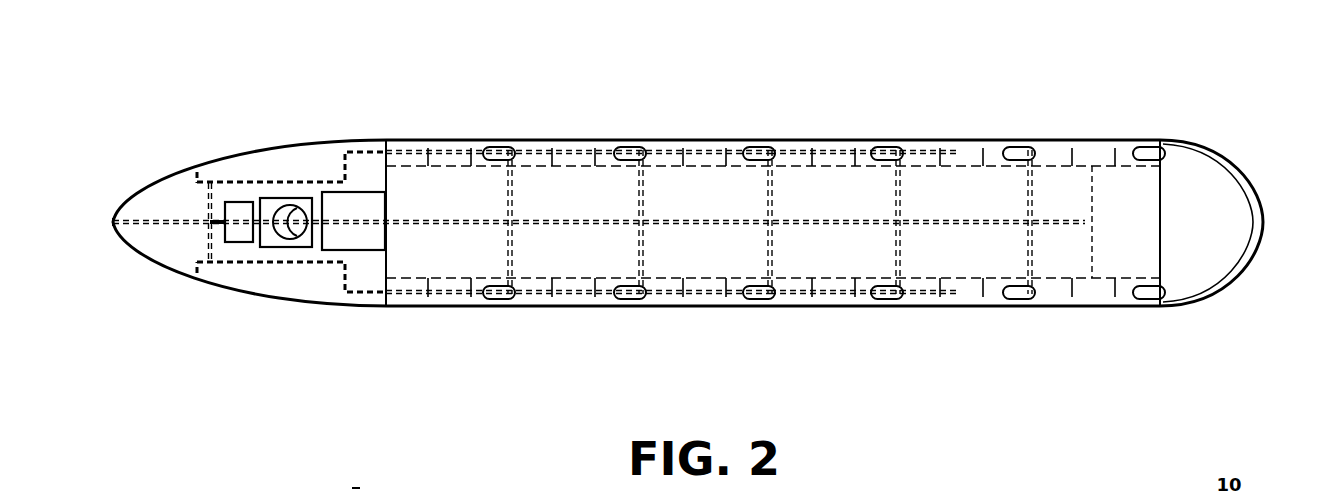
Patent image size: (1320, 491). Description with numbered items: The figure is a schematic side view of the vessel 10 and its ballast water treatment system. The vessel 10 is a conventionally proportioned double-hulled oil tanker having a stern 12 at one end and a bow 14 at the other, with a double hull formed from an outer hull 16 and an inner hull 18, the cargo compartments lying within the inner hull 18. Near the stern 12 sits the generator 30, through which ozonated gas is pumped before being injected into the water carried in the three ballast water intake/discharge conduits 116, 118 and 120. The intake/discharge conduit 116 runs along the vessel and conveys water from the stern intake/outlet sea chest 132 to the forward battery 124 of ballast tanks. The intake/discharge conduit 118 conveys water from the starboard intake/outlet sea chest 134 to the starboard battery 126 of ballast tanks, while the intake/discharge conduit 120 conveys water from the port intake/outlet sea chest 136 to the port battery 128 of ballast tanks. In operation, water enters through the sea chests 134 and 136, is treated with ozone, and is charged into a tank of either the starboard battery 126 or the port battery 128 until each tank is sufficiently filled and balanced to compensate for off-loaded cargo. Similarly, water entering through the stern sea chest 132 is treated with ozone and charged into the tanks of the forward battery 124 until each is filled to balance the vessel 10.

The vessel 10 is at (1146, 96).
The stern 12 is at (118, 243).
The bow 14 is at (1265, 220).
The outer hull 16 is at (543, 137).
The inner hull 18 is at (565, 168).
The generator 30 is at (238, 210).
The intake/discharge conduit 116 is at (143, 216).
The intake/discharge conduit 118 is at (253, 266).
The intake/discharge conduit 120 is at (272, 179).
The forward battery of ballast tanks 124 is at (837, 138).
The starboard battery of ballast tanks 126 is at (447, 307).
The port battery of ballast tanks 128 is at (447, 138).
The stern intake/outlet sea chest 132 is at (113, 222).
The starboard intake/outlet sea chest 134 is at (198, 273).
The port intake/outlet sea chest 136 is at (199, 178).